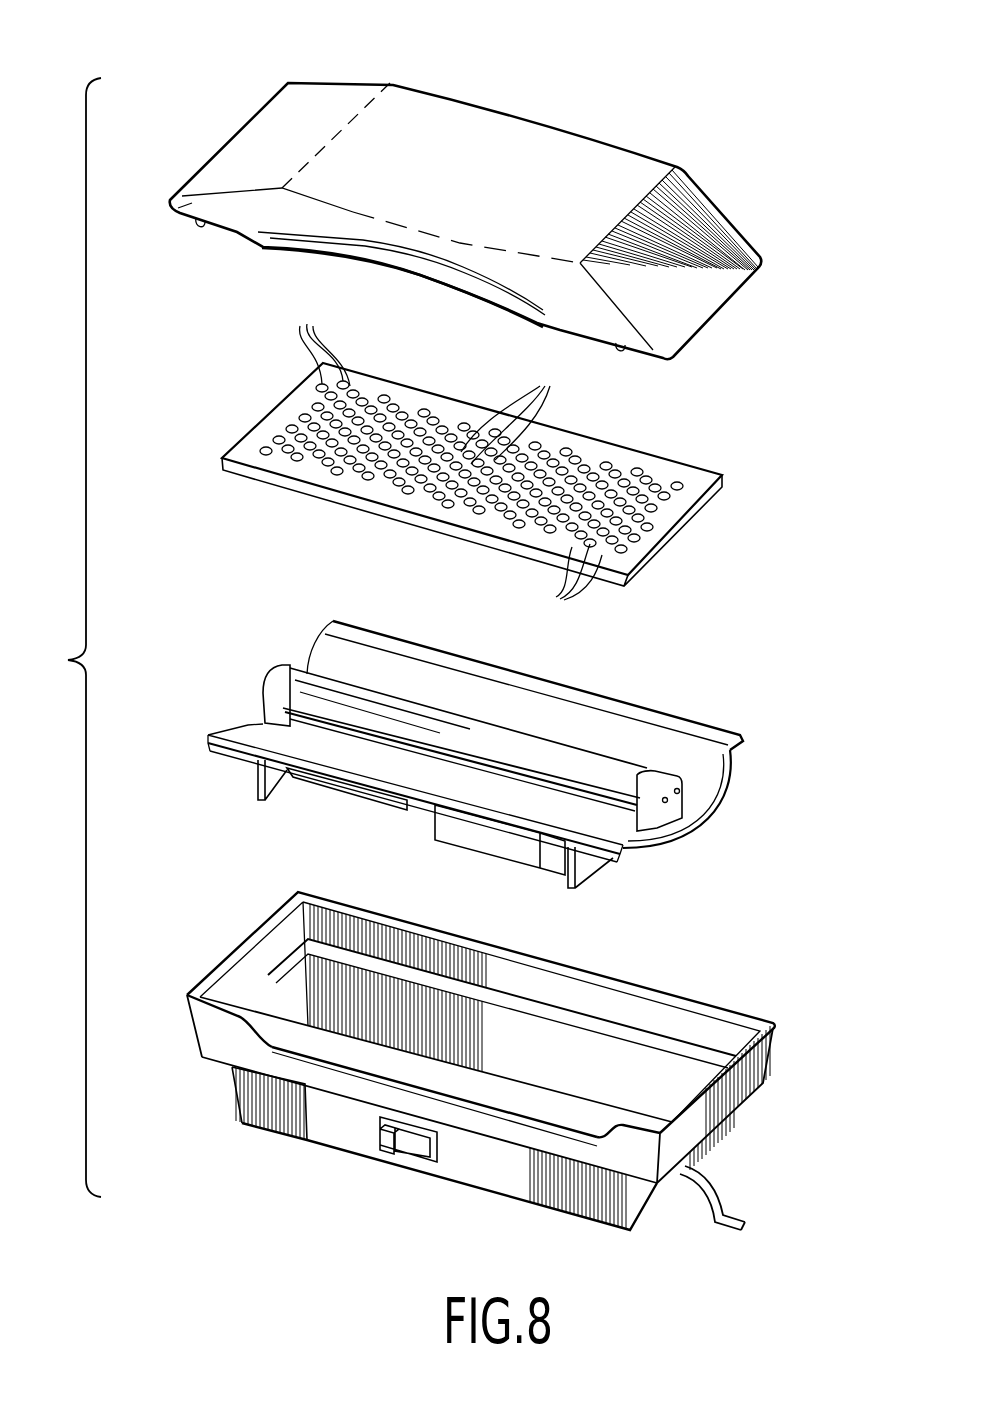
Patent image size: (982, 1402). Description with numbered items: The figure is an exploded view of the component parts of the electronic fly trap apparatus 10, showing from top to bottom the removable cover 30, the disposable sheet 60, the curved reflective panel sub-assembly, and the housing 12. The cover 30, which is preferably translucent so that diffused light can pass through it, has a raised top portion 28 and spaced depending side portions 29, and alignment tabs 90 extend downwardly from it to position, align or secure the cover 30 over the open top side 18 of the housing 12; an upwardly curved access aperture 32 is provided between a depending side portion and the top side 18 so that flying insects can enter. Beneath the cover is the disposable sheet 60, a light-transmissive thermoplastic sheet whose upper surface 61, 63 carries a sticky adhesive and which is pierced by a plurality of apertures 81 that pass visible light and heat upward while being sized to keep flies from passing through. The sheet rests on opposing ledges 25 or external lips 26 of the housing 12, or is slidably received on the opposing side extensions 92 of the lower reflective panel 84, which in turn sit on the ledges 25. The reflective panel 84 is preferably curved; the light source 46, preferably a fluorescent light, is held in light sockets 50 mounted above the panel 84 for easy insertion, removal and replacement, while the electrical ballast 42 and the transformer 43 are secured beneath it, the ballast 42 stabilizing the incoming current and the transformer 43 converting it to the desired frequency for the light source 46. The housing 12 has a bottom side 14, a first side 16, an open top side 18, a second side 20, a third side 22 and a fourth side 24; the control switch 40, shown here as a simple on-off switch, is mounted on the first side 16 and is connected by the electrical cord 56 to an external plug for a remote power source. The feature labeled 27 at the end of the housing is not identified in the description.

The electronic fly trap apparatus 10 is at (61, 637).
The housing 12 is at (467, 1069).
The bottom side 14 is at (588, 1222).
The first side 16 is at (520, 1190).
The top side 18 is at (372, 928).
The second side 20 is at (186, 1033).
The third side 22 is at (743, 1014).
The fourth side 24 is at (727, 1130).
The opposing ledges 25 is at (270, 978).
The external lip 26 is at (467, 290).
The rim end face 27 is at (745, 1118).
The raised top portion 28 is at (615, 157).
The depending side portions 29 is at (312, 88).
The cover 30 is at (447, 86).
The upwardly curved access aperture 32 is at (374, 252).
The control switch 40 is at (380, 1150).
The electrical ballast 42 is at (310, 780).
The transformer 43 is at (480, 843).
The light source 46 is at (530, 743).
The light sockets 50 is at (278, 670).
The electrical cord 56 is at (707, 1223).
The disposable sheet 60 is at (496, 454).
The upper surface 61 is at (685, 503).
The upper surface 63 is at (653, 557).
The apertures 81 is at (441, 454).
The lower reflective panel 84 is at (655, 737).
The alignment tabs 90 is at (203, 226).
The opposing side extensions 92 is at (353, 628).